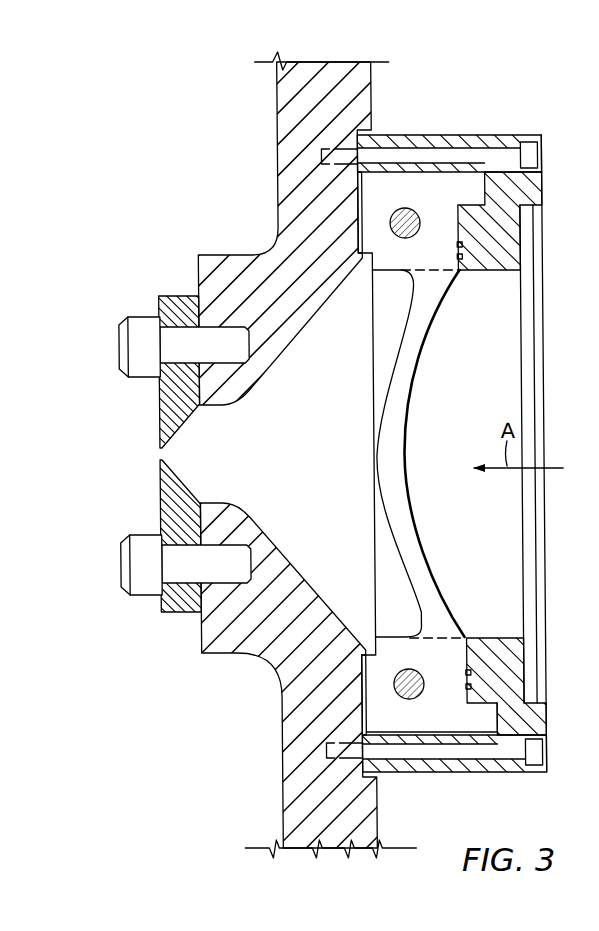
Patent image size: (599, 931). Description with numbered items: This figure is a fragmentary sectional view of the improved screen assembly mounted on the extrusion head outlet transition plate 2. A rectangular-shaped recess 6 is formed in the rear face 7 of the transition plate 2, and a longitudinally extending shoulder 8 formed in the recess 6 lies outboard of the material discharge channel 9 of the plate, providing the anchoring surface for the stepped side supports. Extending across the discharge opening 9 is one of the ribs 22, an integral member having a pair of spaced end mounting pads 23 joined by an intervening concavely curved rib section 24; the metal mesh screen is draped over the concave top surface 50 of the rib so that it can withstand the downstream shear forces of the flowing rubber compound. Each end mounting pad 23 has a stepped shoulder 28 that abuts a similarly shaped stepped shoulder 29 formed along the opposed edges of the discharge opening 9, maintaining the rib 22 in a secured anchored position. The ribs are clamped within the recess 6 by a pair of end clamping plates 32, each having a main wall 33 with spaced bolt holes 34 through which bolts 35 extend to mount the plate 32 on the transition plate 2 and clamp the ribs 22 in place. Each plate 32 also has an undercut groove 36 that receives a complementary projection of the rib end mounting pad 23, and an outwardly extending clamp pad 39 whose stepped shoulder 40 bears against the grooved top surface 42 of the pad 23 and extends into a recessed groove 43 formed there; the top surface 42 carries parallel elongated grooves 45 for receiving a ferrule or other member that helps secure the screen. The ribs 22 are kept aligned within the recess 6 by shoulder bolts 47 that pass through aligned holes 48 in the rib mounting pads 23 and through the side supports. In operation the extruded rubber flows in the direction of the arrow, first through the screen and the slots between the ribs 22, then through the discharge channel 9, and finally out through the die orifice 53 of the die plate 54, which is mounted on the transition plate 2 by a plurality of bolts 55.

The transition plate 2 is at (276, 705).
The recess 6 is at (358, 663).
The rear face 7 is at (372, 102).
The shoulder 8 is at (374, 545).
The material discharge channel 9 is at (282, 453).
The rib 22 is at (427, 560).
The end mounting pad 23 is at (436, 651).
The concavely curved rib section 24 is at (393, 432).
The stepped shoulder 28 is at (364, 253).
The stepped shoulder 29 is at (367, 265).
The end clamping plate 32 is at (549, 181).
The main wall 33 is at (403, 737).
The bolt hole 34 is at (505, 148).
The bolt 35 is at (472, 155).
The undercut groove 36 is at (487, 186).
The clamp pad 39 is at (505, 659).
The stepped shoulder 40 is at (470, 643).
The top surface 42 is at (459, 243).
The recessed groove 43 is at (464, 694).
The elongated groove 45 is at (465, 250).
The shoulder bolt 47 is at (400, 688).
The hole 48 is at (404, 237).
The concave top surface 50 is at (418, 370).
The die orifice 53 is at (158, 455).
The die plate 54 is at (177, 607).
The bolt 55 is at (145, 333).